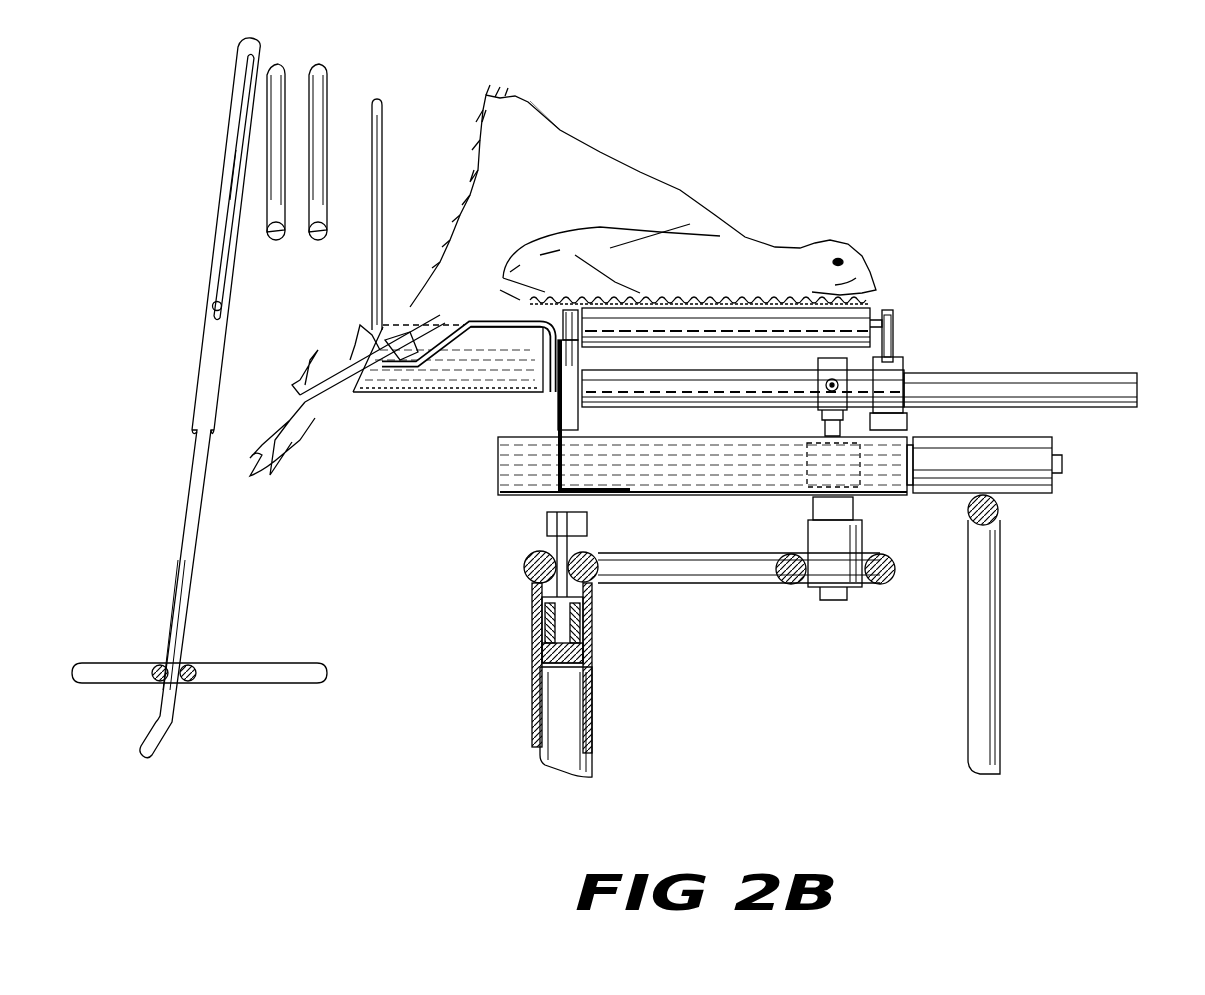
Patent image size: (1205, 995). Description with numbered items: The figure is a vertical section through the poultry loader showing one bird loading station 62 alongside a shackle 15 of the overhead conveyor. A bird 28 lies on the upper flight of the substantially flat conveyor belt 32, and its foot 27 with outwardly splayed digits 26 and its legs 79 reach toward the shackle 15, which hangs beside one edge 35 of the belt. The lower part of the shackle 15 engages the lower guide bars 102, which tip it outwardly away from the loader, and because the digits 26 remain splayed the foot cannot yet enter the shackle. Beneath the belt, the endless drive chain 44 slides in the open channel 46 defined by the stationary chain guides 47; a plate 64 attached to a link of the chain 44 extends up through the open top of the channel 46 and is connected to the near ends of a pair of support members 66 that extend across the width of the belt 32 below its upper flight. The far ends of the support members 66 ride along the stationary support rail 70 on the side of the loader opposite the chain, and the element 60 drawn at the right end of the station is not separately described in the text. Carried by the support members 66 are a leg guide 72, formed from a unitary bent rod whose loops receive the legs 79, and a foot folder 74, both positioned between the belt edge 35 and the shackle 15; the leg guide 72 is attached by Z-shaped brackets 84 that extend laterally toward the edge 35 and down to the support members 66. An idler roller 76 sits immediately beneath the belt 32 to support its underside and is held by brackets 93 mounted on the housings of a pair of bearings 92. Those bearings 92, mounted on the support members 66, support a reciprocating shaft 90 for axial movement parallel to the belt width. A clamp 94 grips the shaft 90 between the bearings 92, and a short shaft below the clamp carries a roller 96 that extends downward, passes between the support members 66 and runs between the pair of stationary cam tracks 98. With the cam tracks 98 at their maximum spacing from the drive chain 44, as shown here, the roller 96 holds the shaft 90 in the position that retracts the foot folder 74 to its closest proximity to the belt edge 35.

The shackle 15 is at (205, 352).
The digits 26 is at (268, 478).
The foot 27 is at (283, 412).
The bird 28 is at (613, 165).
The conveyor belt 32 is at (676, 303).
The edge of the belt 35 is at (505, 318).
The drive chain 44 is at (580, 635).
The open channel 46 is at (540, 594).
The chain guides 47 is at (535, 665).
The roller 60 is at (1040, 455).
The bird loading station 62 is at (533, 98).
The plate 64 is at (548, 527).
The support members 66 is at (650, 495).
The support rail 70 is at (998, 510).
The leg guide 72 is at (385, 178).
The foot folder 74 is at (398, 428).
The idler roller 76 is at (732, 306).
The legs 79 is at (375, 347).
The Z-shaped brackets 84 is at (440, 375).
The reciprocating shaft 90 is at (718, 395).
The bearings 92 is at (898, 385).
The brackets 93 is at (892, 338).
The clamp 94 is at (822, 425).
The roller 96 is at (862, 535).
The cam tracks 98 is at (878, 586).
The lower guide bars 102 is at (162, 664).